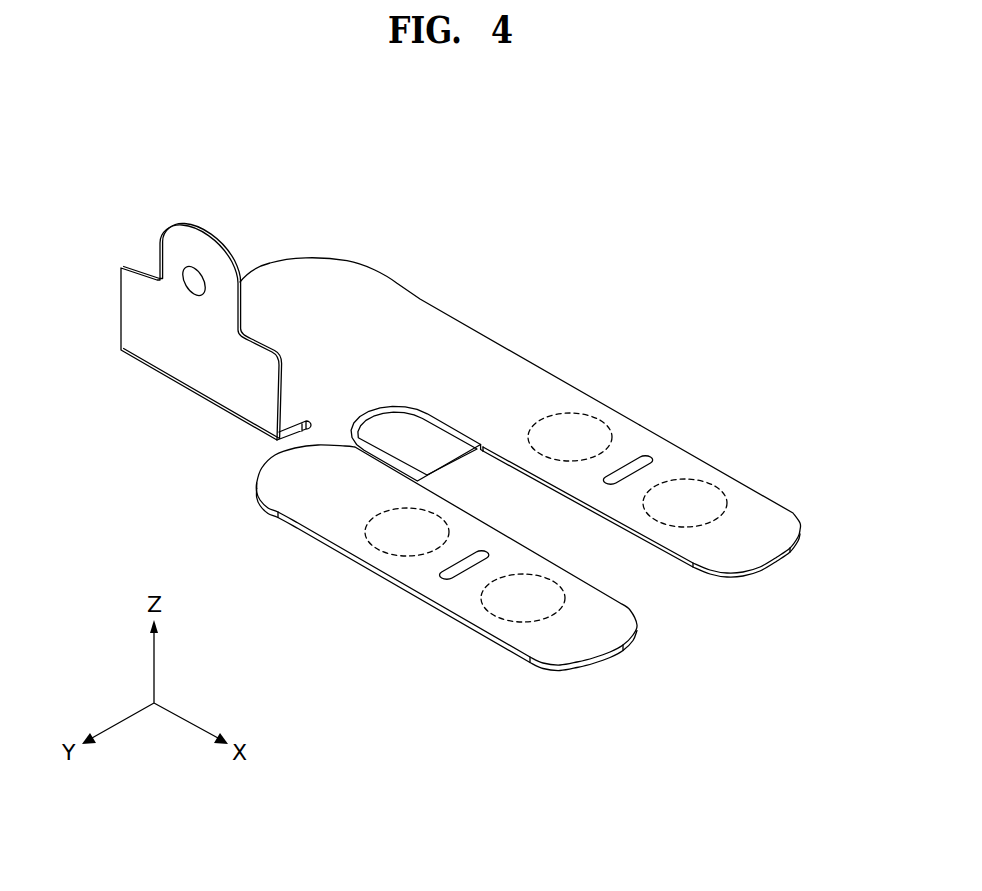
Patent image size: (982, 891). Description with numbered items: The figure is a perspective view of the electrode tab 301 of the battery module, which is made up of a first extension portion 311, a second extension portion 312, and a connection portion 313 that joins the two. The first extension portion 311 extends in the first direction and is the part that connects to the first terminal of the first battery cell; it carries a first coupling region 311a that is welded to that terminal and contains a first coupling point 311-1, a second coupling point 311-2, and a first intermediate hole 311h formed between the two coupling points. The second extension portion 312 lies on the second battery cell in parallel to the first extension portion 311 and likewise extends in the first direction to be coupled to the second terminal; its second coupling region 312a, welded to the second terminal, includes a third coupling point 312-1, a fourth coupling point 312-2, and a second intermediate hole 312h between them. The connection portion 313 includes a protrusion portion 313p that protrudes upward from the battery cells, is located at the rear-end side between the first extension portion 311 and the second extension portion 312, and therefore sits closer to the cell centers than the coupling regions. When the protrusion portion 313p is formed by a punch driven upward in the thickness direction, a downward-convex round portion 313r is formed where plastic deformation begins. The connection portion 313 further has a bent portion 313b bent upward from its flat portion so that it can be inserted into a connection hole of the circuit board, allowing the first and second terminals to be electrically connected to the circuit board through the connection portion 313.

The electrode tab 301 is at (582, 240).
The first extension portion 311 is at (768, 547).
The first coupling region 311a is at (776, 372).
The first intermediate hole 311h is at (643, 457).
The first coupling point 311-1 is at (714, 482).
The second coupling point 311-2 is at (573, 412).
The second extension portion 312 is at (579, 648).
The second coupling region 312a is at (458, 747).
The second intermediate hole 312h is at (440, 577).
The third coupling point 312-1 is at (503, 621).
The fourth coupling point 312-2 is at (372, 543).
The connection portion 313 is at (370, 302).
The bent portion 313b is at (176, 364).
The protrusion portion 313p is at (400, 432).
The round portion 313r is at (387, 457).